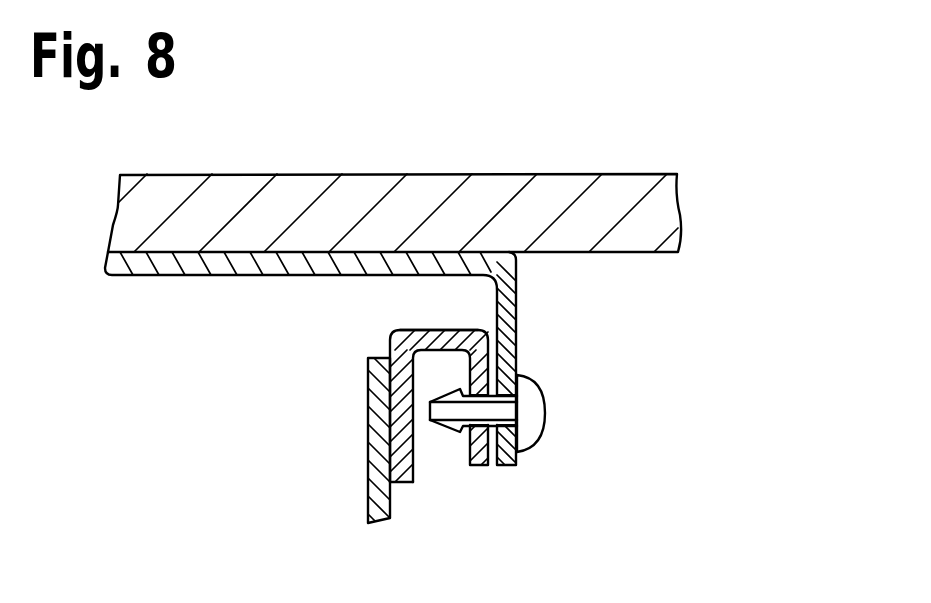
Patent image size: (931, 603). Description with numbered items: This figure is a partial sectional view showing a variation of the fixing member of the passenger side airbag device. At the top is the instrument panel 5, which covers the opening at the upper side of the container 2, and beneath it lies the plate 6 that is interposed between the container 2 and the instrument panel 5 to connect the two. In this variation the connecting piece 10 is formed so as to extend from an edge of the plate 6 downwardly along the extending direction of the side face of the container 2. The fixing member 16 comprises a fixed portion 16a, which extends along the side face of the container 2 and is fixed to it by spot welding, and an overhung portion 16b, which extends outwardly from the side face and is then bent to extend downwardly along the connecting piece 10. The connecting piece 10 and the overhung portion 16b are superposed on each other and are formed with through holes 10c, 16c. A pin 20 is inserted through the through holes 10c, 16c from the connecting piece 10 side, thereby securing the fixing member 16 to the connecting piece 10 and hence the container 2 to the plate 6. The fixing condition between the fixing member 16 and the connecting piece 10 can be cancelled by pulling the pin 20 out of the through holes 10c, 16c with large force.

The container 2 is at (377, 453).
The instrument panel 5 is at (483, 188).
The plate 6 is at (150, 265).
The connecting piece 10 is at (517, 311).
The through hole 10c is at (517, 423).
The fixing member 16 is at (387, 331).
The fixed portion 16a is at (403, 478).
The overhung portion 16b is at (453, 333).
The through hole 16c is at (456, 430).
The pin 20 is at (560, 405).